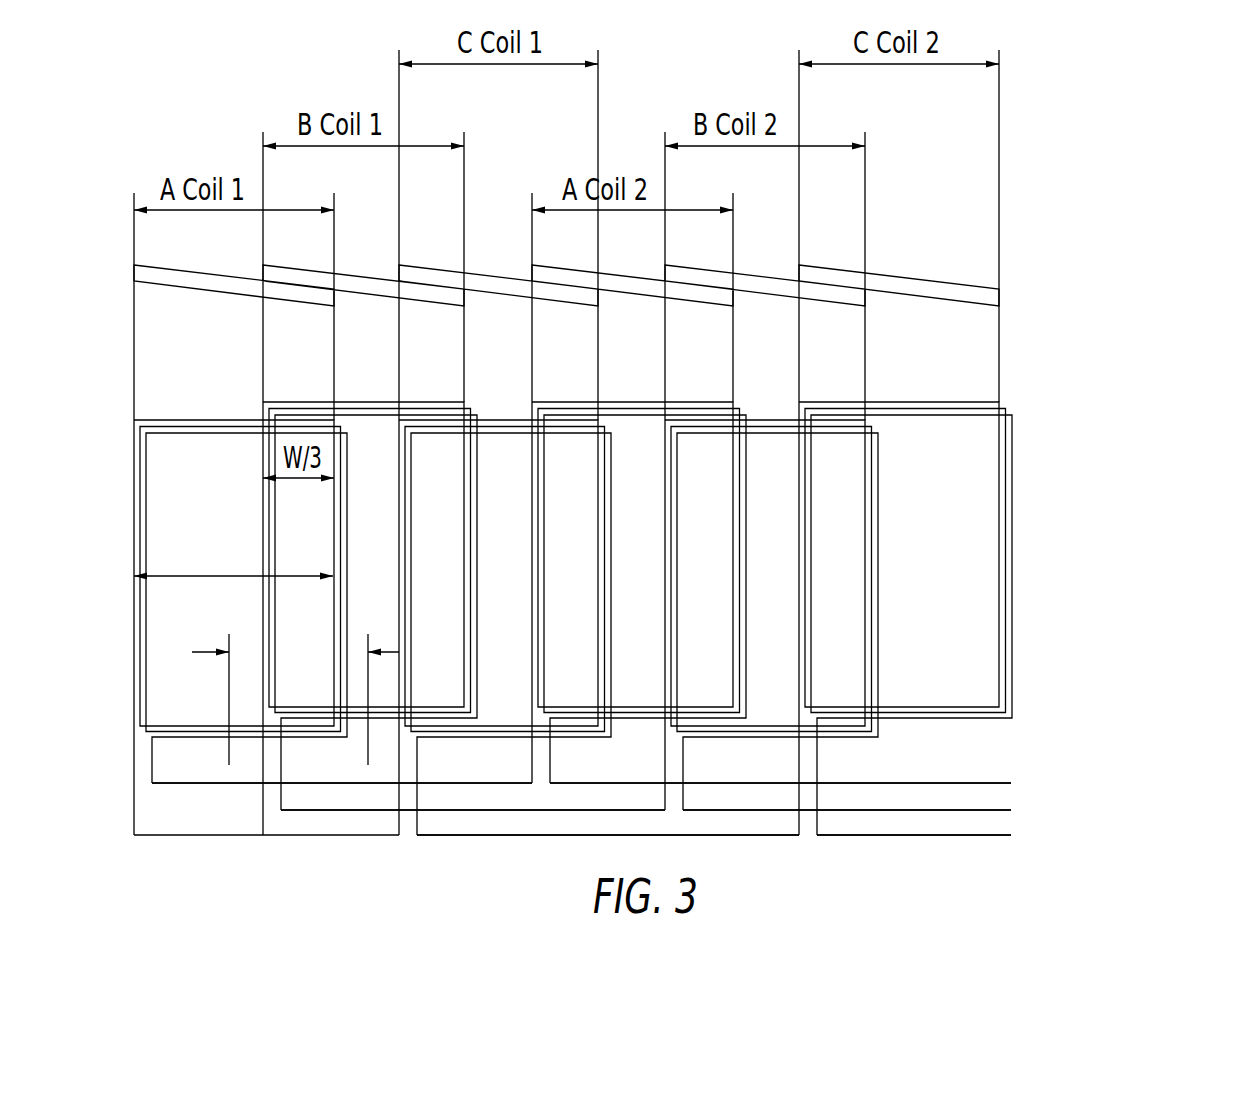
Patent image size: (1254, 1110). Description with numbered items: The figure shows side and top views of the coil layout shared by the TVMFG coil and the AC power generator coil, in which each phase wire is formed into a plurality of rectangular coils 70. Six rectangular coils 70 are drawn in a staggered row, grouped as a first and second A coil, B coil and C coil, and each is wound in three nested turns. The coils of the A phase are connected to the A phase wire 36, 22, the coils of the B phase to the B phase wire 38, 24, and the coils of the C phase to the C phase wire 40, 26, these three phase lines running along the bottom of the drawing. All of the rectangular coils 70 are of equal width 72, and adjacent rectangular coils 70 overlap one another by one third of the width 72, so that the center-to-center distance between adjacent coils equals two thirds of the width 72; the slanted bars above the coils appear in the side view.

The rectangular coil 70 is at (1012, 442).
The width 72 is at (230, 580).
The A phase wire 36 is at (1006, 783).
The A phase wire 22 is at (1006, 783).
The B phase wire 38 is at (1006, 810).
The B phase wire 24 is at (1006, 810).
The C phase wire 40 is at (1006, 836).
The C phase wire 26 is at (1006, 836).